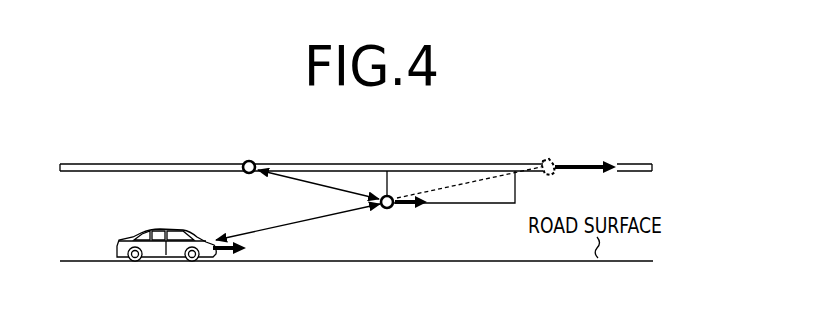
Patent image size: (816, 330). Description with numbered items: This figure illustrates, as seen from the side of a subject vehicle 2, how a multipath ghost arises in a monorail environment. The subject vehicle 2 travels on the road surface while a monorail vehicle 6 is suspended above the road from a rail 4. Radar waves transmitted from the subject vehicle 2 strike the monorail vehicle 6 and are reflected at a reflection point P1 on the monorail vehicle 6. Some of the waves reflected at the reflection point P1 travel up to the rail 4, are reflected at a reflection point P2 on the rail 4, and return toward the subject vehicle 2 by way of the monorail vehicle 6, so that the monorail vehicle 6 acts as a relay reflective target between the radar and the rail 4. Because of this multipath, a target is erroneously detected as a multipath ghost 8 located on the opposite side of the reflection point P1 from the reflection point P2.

The vehicle 2 is at (167, 230).
The rail 4 is at (190, 163).
The monorail vehicle 6 is at (493, 205).
The multipath ghost 8 is at (549, 159).
The reflection point P1 is at (387, 209).
The reflection point P2 is at (249, 160).